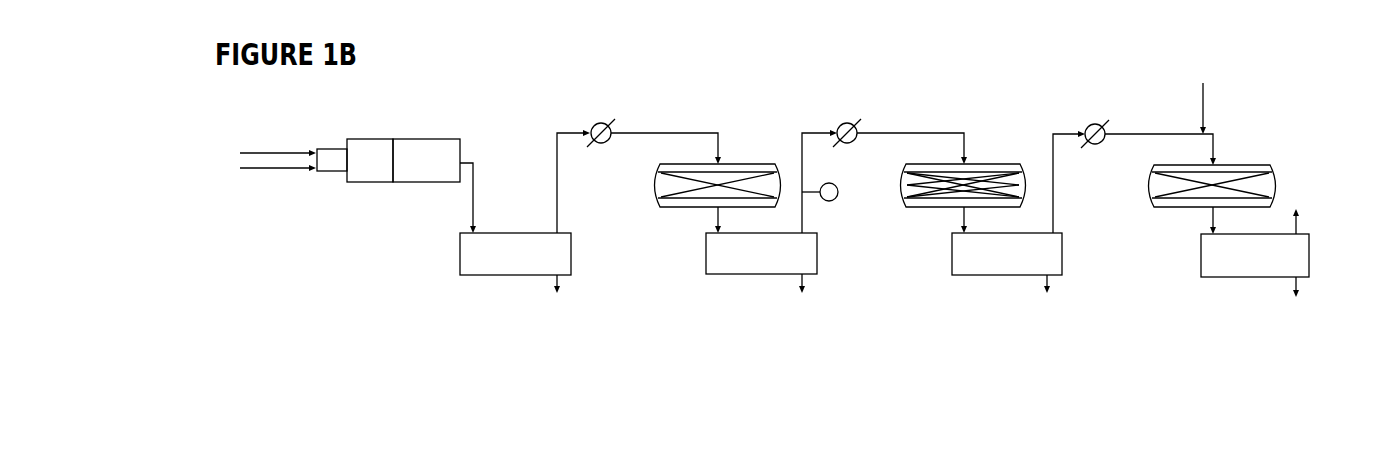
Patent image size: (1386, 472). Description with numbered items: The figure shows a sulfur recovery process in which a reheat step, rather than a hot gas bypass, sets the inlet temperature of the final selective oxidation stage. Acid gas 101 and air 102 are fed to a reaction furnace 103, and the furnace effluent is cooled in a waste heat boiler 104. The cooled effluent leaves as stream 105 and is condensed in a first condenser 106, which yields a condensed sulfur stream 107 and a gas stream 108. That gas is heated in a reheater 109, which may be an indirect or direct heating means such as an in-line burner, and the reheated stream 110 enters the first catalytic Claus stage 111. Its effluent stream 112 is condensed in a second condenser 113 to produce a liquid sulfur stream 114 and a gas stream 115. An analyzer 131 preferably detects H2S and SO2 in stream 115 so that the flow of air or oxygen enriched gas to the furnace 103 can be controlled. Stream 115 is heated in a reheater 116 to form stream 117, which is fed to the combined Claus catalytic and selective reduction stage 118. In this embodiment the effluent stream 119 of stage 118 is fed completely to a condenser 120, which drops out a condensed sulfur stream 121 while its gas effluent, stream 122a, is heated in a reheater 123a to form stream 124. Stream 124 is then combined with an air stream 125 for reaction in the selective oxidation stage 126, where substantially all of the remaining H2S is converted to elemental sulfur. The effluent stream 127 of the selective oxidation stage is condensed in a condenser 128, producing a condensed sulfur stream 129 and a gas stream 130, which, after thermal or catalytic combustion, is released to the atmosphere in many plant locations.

The acid gas 101 is at (252, 148).
The air 102 is at (252, 178).
The reaction furnace 103 is at (355, 146).
The waste heat boiler 104 is at (434, 171).
The cooled effluent stream 105 is at (466, 217).
The first condenser 106 is at (515, 254).
The condensed sulfur stream 107 is at (554, 304).
The gas stream 108 is at (581, 181).
The reheater 109 is at (604, 116).
The reheated stream 110 is at (666, 135).
The first catalytic Claus stage 111 is at (709, 203).
The effluent stream 112 is at (711, 213).
The second condenser 113 is at (761, 240).
The liquid sulfur stream 114 is at (806, 301).
The gas stream 115 is at (801, 169).
The reheater 116 is at (862, 117).
The reheated stream 117 is at (912, 135).
The combined Claus catalytic and selective reduction stage 118 is at (945, 202).
The effluent stream 119 is at (957, 215).
The condenser 120 is at (1007, 241).
The condensed sulfur stream 121 is at (1051, 303).
The gas stream 122a is at (1048, 169).
The reheater 123a is at (1109, 118).
The reheated stream 124 is at (1160, 135).
The air stream 125 is at (1203, 93).
The selective oxidation stage 126 is at (1198, 203).
The effluent stream 127 is at (1205, 217).
The condenser 128 is at (1255, 242).
The condensed sulfur stream 129 is at (1303, 305).
The gas stream 130 is at (1313, 208).
The analyzer 131 is at (833, 207).